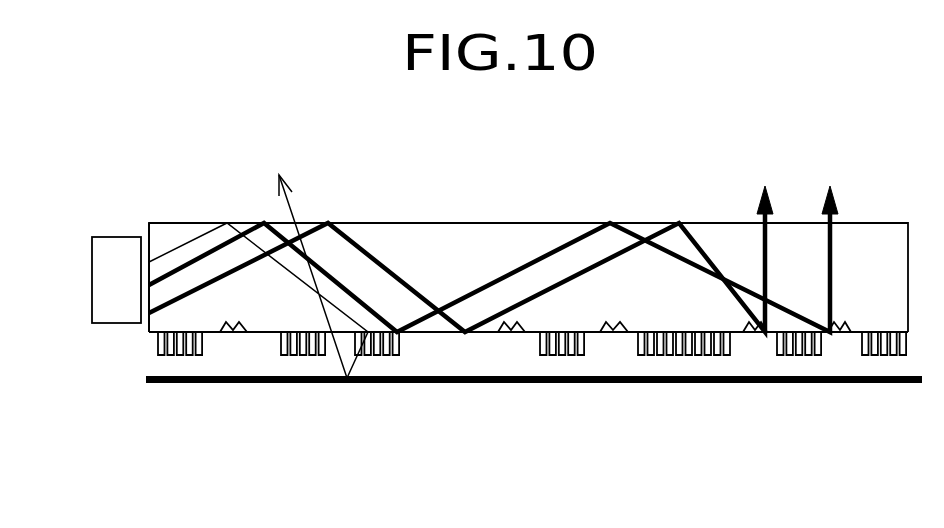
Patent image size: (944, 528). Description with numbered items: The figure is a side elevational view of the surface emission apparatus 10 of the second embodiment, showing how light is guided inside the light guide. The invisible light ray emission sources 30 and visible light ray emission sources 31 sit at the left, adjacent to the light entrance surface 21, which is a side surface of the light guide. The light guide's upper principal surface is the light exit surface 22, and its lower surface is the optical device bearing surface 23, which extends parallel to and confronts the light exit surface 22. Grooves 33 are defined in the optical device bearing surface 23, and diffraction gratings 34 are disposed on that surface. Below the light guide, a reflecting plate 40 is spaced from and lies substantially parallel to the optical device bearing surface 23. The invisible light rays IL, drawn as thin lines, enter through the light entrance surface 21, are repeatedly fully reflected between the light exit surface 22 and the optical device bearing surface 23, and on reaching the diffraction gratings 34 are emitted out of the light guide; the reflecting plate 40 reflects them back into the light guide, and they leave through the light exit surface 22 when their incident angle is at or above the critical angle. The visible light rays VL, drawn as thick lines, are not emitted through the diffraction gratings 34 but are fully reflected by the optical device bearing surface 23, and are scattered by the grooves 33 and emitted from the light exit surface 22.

The surface emission apparatus 10 is at (521, 498).
The light entrance surface 21 is at (148, 227).
The light exit surface 22 is at (492, 222).
The optical device bearing surface 23 is at (455, 334).
The invisible light ray emission source 30 is at (107, 333).
The visible light ray emission source 31 is at (105, 323).
The groove 33 is at (233, 336).
The diffraction grating 34 is at (653, 356).
The reflecting plate 40 is at (885, 383).
The invisible light rays IL is at (188, 238).
The visible light rays VL is at (368, 248).